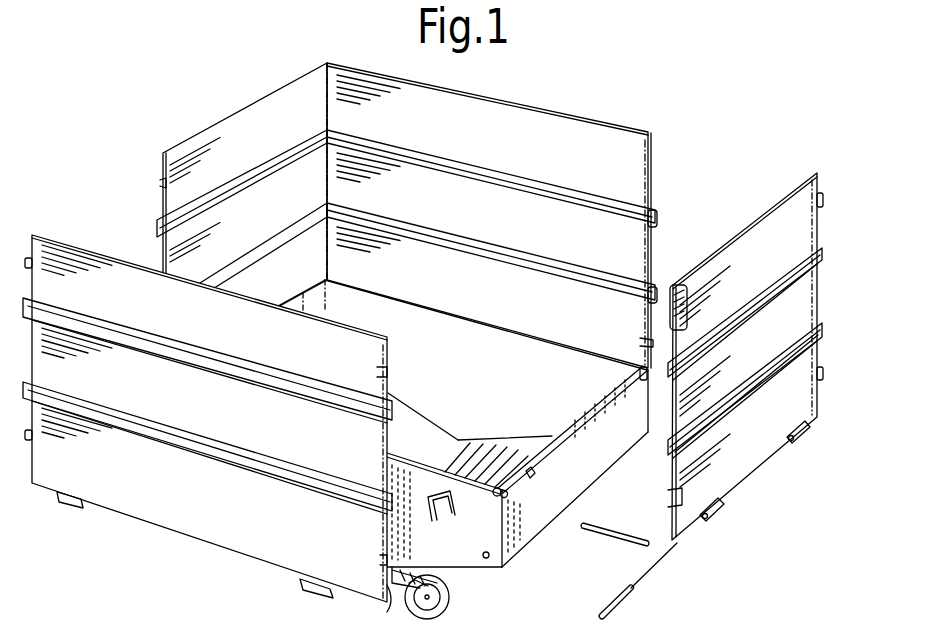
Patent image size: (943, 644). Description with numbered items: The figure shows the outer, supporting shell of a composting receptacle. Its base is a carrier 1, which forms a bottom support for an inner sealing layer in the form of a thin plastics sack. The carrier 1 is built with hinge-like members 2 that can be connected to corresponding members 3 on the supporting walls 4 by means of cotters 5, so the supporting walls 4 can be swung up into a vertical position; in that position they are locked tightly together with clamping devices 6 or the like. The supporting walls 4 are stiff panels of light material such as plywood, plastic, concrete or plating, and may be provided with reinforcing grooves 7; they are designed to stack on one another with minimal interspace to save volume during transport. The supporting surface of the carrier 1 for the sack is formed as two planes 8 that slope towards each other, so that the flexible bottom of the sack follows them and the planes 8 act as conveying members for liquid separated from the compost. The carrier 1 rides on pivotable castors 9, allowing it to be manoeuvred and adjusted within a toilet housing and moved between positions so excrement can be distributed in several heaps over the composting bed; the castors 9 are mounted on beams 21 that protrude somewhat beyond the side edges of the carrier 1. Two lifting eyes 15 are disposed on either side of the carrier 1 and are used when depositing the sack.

The carrier 1 is at (593, 447).
The hinge-like members 2 is at (527, 472).
The corresponding members 3 is at (68, 505).
The supporting walls 4 is at (207, 510).
The cotters 5 is at (610, 533).
The clamping devices 6 is at (160, 183).
The reinforcing grooves 7 is at (800, 353).
The sloping planes 8 is at (433, 437).
The pivotable castors 9 is at (450, 603).
The lifting eyes 15 is at (455, 507).
The beams 21 is at (388, 598).